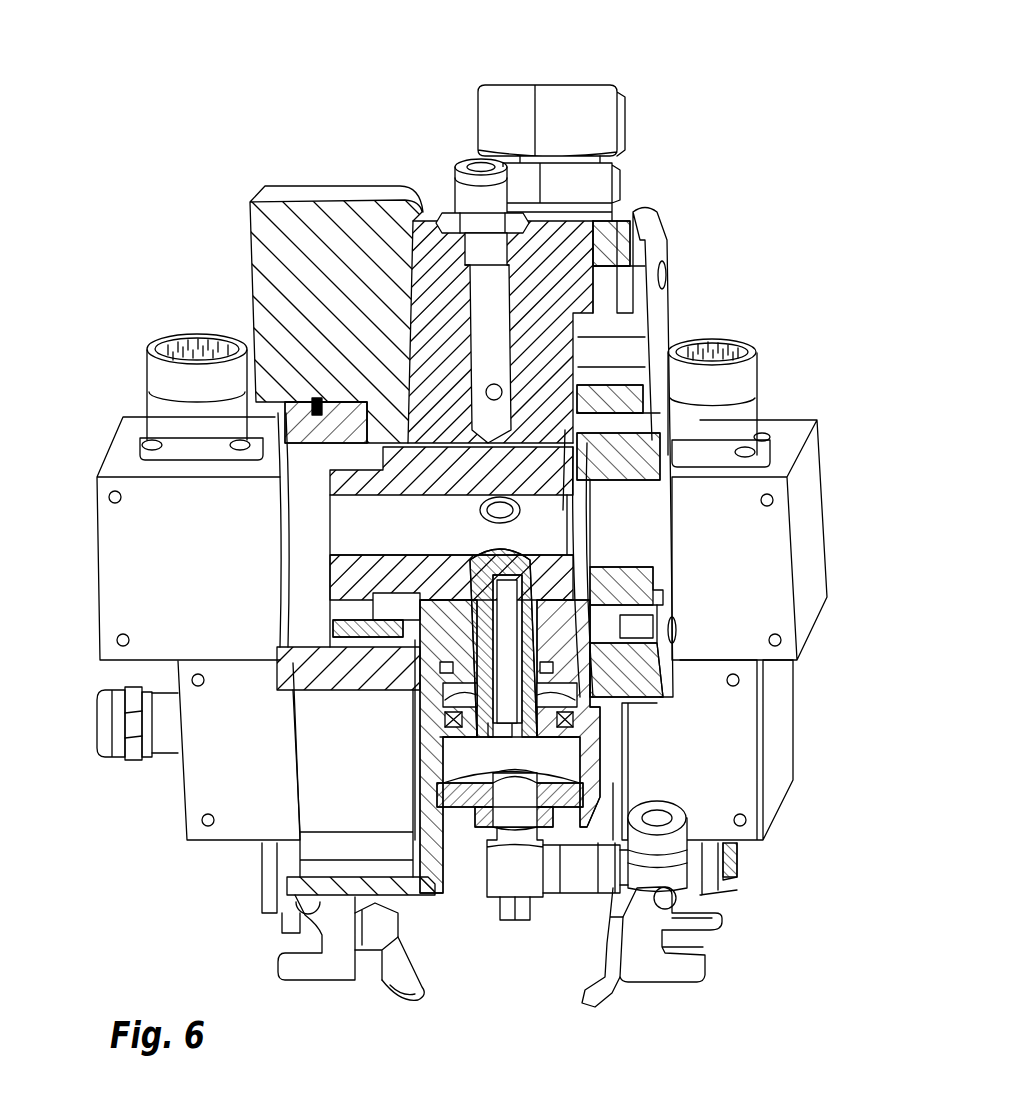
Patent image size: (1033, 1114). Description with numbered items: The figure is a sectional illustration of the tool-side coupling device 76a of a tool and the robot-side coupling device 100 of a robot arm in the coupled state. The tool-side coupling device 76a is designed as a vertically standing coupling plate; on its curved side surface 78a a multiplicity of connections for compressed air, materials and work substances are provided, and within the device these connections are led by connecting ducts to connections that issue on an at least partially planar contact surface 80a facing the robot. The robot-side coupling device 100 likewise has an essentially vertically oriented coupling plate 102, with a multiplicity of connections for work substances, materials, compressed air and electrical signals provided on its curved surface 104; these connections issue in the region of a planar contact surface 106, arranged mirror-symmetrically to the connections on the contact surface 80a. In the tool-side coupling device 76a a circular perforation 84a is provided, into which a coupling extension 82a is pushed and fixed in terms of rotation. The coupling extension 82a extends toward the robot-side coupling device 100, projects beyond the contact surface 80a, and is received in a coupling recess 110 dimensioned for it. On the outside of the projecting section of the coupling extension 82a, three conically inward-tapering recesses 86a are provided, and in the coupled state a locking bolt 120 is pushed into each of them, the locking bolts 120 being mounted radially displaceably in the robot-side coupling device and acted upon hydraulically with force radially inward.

The coupling device 76a is at (407, 232).
The curved side surface 78a is at (343, 193).
The contact surface 80a is at (367, 245).
The coupling extension 82a is at (352, 457).
The circular perforation 84a is at (197, 338).
The recesses 86a is at (473, 577).
The robot-side coupling device 100 is at (413, 507).
The coupling plate 102 is at (465, 245).
The curved surface 104 is at (548, 213).
The planar contact surface 106 is at (420, 240).
The coupling recess 110 is at (530, 525).
The locking bolt 120 is at (520, 550).